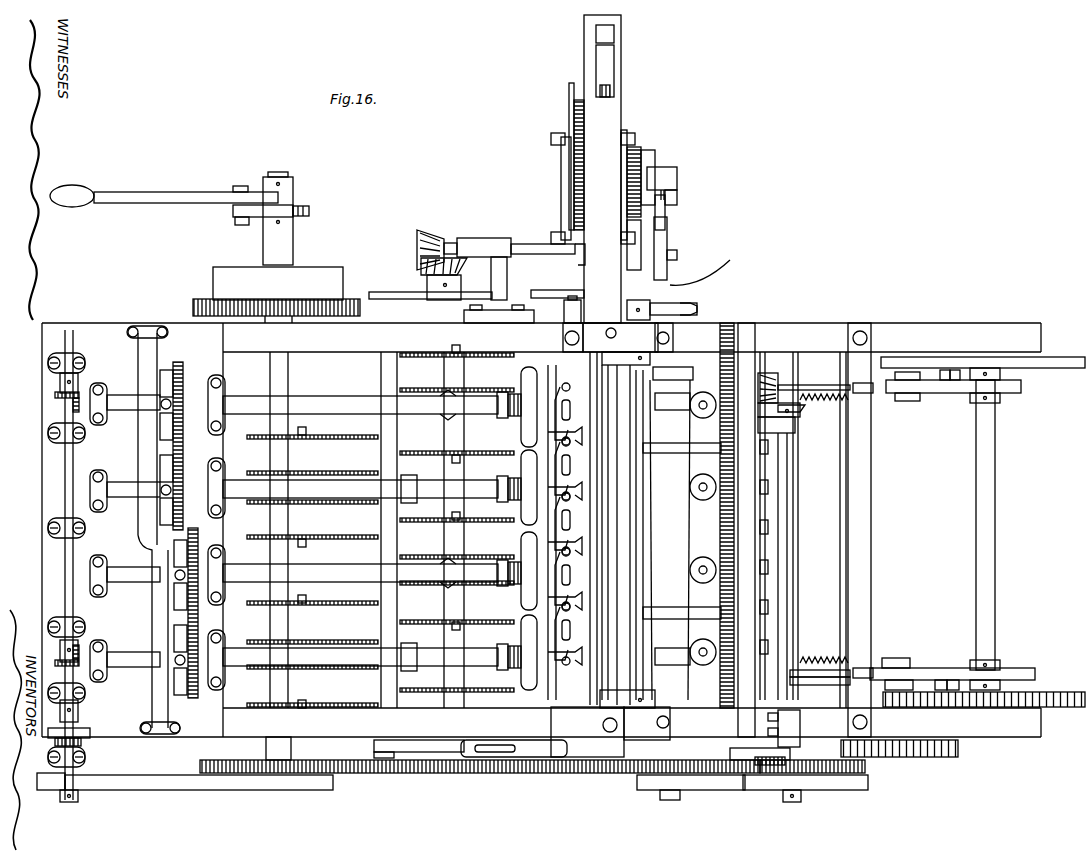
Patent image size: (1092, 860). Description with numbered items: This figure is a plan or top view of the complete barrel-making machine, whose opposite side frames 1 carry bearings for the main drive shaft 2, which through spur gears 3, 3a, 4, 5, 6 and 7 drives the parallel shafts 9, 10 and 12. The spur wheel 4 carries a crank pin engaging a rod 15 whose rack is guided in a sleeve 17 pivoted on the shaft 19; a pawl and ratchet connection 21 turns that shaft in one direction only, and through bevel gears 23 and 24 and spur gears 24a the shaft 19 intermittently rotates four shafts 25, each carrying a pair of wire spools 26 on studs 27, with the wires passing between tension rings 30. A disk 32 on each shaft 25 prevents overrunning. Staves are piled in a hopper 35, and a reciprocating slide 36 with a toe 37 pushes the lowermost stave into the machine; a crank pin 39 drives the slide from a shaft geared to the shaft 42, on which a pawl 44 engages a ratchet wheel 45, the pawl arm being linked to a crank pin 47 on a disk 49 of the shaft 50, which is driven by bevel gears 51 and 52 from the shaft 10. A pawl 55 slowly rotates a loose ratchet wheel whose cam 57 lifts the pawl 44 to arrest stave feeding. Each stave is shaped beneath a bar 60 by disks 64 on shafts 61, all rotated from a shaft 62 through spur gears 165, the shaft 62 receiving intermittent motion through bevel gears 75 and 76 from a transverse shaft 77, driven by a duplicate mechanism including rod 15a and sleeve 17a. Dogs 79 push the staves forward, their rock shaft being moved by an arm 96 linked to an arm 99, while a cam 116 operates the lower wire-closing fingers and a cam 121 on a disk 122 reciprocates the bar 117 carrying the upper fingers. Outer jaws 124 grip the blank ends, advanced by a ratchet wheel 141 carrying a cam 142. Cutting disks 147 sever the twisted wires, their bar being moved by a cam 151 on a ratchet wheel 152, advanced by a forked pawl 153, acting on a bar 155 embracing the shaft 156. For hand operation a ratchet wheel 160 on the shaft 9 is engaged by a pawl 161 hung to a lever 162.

The side frames 1 is at (541, 530).
The main drive shaft 2 is at (279, 530).
The spur gear 3 is at (300, 318).
The spur gear 3a is at (198, 299).
The spur wheel 4 is at (232, 762).
The spur wheel 5 is at (418, 773).
The spur wheel 6 is at (585, 773).
The spur wheel 7 is at (865, 768).
The parallel shaft 9 is at (278, 748).
The parallel shaft 10 is at (444, 372).
The parallel shaft 12 is at (790, 578).
The rod 15 is at (172, 785).
The rod 15a is at (703, 787).
The sleeve 17 is at (88, 783).
The sleeve 17a is at (770, 785).
The shaft 19 is at (65, 470).
The pawl and ratchet connection 21 is at (85, 740).
The bevel gear 23 is at (55, 396).
The bevel gear 24 is at (73, 405).
The spur gears 24a is at (184, 380).
The shaft 25 is at (330, 396).
The spool 26 is at (330, 471).
The stud 27 is at (392, 530).
The tension ring 30 is at (521, 437).
The disk 32 is at (160, 433).
The hopper 35 is at (602, 169).
The reciprocating slide 36 is at (578, 256).
The toe 37 is at (610, 60).
The crank pin 39 is at (561, 203).
The shaft 42 is at (677, 180).
The pawl 44 is at (665, 213).
The ratchet wheel 45 is at (655, 156).
The crank pin 47 is at (667, 265).
The disk 49 is at (700, 272).
The shaft 50 is at (528, 243).
The bevel gear 51 is at (425, 232).
The bevel gear 52 is at (463, 268).
The pawl 55 is at (636, 255).
The cam 57 is at (640, 152).
The bar 60 is at (602, 583).
The shaft 61 is at (682, 528).
The shaft 62 is at (680, 382).
The disk 64 is at (615, 548).
The bevel gear 75 is at (778, 378).
The bevel gear 76 is at (800, 412).
The transverse shaft 77 is at (787, 528).
The dogs 79 is at (568, 524).
The arm 96 is at (422, 740).
The arm 99 is at (507, 741).
The cam 116 is at (410, 296).
The bar 117 is at (597, 490).
The cam 121 is at (697, 306).
The disk 122 is at (548, 284).
The outer jaw 124 is at (669, 529).
The ratchet wheel 141 is at (910, 758).
The cam 142 is at (902, 745).
The cutting disk 147 is at (706, 665).
The cam 151 is at (953, 393).
The ratchet wheel 152 is at (1065, 687).
The pawl 153 is at (825, 700).
The bar 155 is at (828, 392).
The shaft 156 is at (995, 572).
The ratchet wheel 160 is at (309, 211).
The pawl 161 is at (252, 218).
The lever 162 is at (180, 203).
The spur gears 165 is at (722, 304).